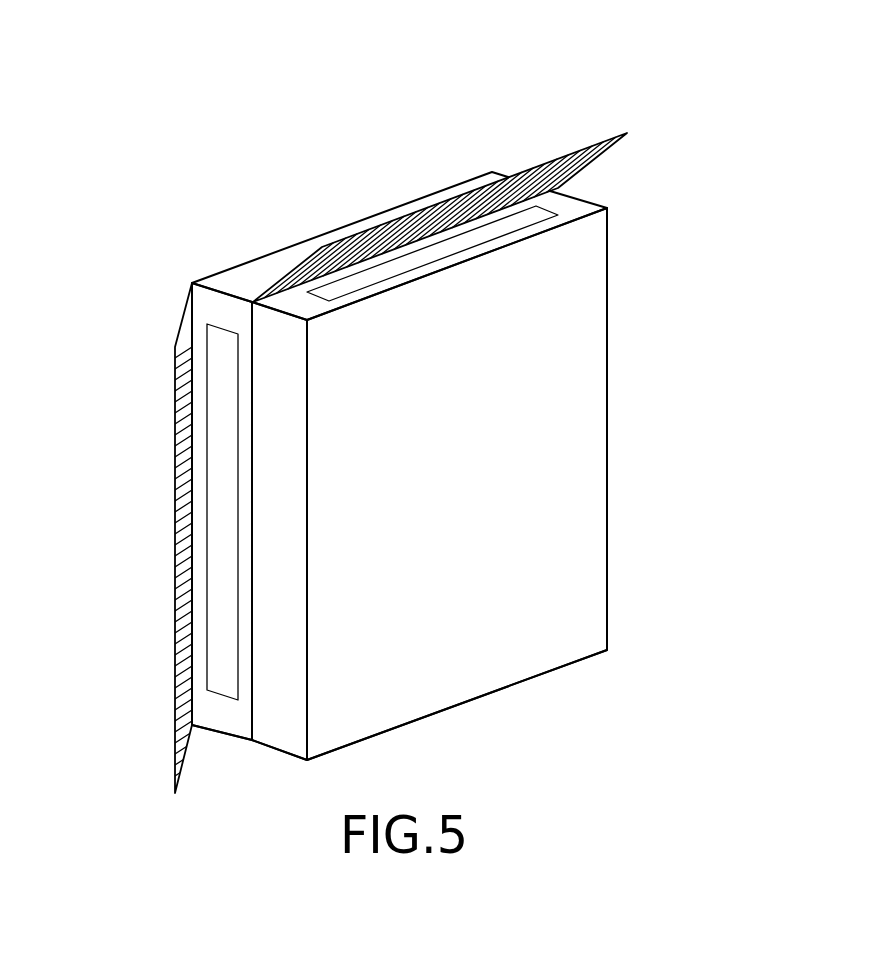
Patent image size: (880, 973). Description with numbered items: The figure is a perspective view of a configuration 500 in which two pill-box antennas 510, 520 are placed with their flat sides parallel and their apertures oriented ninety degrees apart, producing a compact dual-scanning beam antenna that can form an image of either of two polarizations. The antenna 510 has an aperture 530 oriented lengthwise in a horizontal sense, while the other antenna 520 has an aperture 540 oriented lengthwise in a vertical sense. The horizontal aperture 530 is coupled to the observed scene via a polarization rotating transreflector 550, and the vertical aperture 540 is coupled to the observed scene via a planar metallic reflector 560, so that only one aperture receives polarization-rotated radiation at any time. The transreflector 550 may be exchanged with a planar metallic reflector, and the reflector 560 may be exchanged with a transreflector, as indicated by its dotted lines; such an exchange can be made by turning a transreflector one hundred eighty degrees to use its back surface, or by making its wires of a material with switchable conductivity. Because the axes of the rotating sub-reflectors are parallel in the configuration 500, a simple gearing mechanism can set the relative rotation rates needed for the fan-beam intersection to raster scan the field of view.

The configuration 500 is at (465, 120).
The pill-box antenna 510 is at (565, 540).
The pill-box antenna 520 is at (231, 275).
The horizontal aperture 530 is at (462, 248).
The vertical aperture 540 is at (215, 412).
The transreflector 550 is at (577, 176).
The planar metallic reflector 560 is at (177, 550).